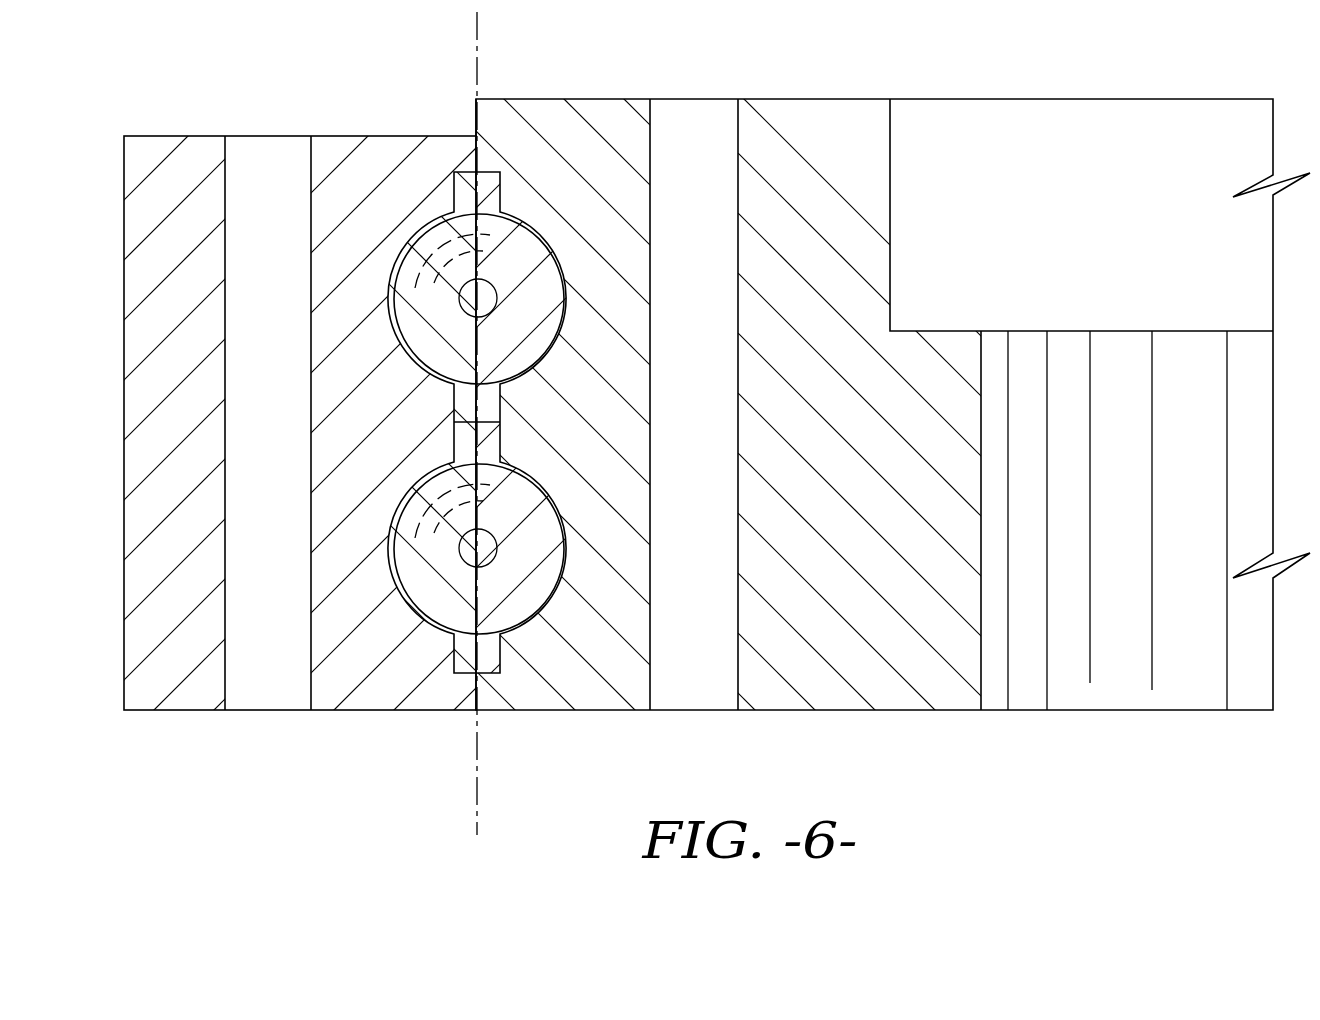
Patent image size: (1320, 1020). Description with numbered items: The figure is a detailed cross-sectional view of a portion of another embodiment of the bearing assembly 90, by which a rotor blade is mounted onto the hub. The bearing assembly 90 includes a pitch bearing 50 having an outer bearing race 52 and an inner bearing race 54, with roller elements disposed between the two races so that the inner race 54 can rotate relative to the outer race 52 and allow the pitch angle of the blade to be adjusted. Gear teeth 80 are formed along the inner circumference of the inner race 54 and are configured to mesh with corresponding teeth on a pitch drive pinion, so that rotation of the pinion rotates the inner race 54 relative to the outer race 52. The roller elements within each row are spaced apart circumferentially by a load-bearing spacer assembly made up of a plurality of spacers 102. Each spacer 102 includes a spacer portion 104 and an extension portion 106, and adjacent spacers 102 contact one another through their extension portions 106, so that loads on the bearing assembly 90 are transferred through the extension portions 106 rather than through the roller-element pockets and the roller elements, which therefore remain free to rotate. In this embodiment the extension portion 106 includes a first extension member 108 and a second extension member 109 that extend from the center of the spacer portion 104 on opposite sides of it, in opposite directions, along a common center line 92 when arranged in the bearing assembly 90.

The pitch bearing 50 is at (165, 133).
The outer bearing race 52 is at (142, 273).
The inner bearing race 54 is at (823, 112).
The gear teeth 80 is at (1091, 683).
The bearing assembly 90 is at (257, 97).
The center line 92 is at (480, 753).
The spacer 102 is at (512, 268).
The spacer portion 104 is at (403, 237).
The extension portion 106 is at (453, 187).
The first extension member 108 is at (488, 397).
The second extension member 109 is at (490, 188).